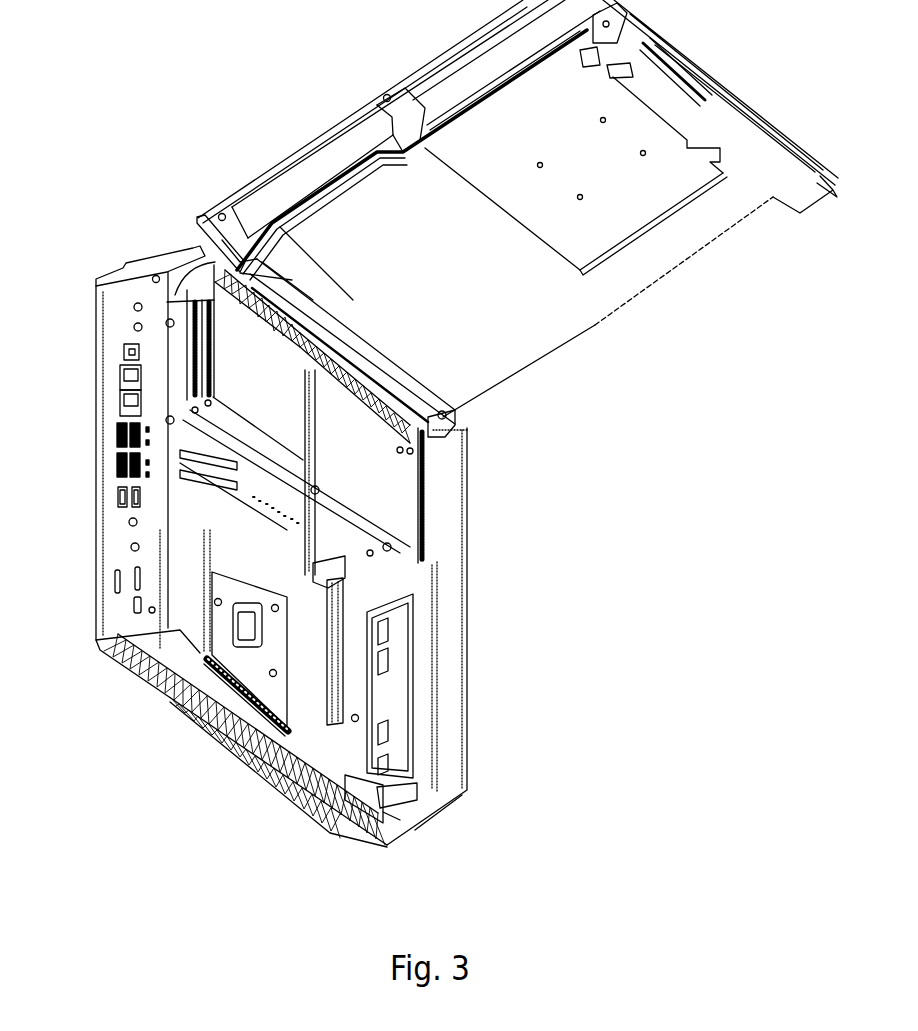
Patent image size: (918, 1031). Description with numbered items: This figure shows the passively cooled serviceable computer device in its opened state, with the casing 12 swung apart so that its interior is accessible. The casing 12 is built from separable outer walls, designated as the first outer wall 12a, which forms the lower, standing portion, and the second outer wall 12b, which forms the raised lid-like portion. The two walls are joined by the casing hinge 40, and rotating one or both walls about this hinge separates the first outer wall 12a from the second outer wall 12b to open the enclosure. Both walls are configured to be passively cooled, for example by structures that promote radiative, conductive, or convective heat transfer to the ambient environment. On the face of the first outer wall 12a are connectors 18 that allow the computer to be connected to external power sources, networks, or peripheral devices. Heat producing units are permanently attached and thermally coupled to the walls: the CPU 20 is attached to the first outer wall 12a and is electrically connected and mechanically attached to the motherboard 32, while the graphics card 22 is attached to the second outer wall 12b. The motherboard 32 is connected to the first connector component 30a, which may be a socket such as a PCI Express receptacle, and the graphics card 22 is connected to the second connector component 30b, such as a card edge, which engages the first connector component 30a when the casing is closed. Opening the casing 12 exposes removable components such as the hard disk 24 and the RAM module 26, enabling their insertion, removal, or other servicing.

The casing 12 is at (175, 142).
The first outer wall 12a is at (465, 705).
The second outer wall 12b is at (590, 328).
The connectors 18 is at (120, 473).
The CPU 20 is at (237, 625).
The graphics card 22 is at (625, 233).
The hard disk 24 is at (367, 487).
The RAM module 26 is at (325, 557).
The first connector component 30a is at (233, 700).
The second connector component 30b is at (665, 98).
The motherboard 32 is at (183, 543).
The casing hinge 40 is at (443, 423).